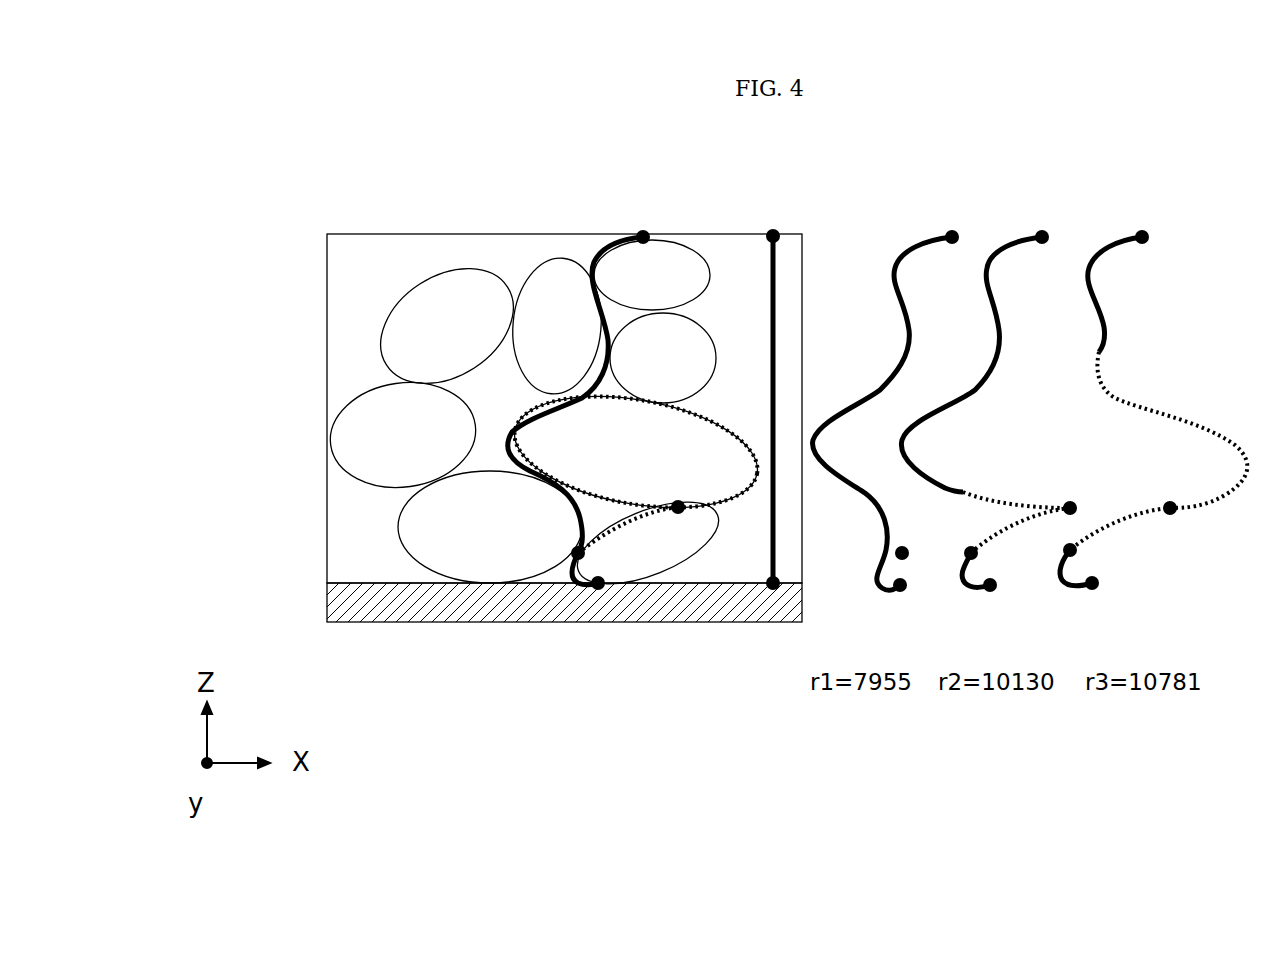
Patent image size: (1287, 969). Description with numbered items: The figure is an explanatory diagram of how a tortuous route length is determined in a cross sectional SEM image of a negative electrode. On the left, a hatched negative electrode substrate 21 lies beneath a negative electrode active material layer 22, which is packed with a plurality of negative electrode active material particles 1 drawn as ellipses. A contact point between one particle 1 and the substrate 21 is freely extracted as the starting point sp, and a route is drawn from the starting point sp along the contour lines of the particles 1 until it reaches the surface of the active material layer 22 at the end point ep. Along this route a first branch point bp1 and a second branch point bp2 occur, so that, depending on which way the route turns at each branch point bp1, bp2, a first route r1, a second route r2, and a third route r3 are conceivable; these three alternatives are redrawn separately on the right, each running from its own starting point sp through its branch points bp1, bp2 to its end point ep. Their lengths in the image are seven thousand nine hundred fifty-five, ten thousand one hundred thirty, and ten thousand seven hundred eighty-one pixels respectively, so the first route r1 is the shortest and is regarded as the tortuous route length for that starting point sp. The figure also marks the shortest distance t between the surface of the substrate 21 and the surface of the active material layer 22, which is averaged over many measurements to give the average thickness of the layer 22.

The negative electrode active material layer 22 is at (327, 352).
The negative electrode substrate 21 is at (327, 605).
The negative electrode active material particle 1 is at (713, 527).
The shortest distance t is at (768, 326).
The end point ep is at (643, 230).
The starting point sp is at (598, 590).
The first branch point bp1 is at (572, 550).
The second branch point bp2 is at (678, 500).
The first route r1 is at (900, 346).
The second route r2 is at (988, 346).
The third route r3 is at (1098, 346).